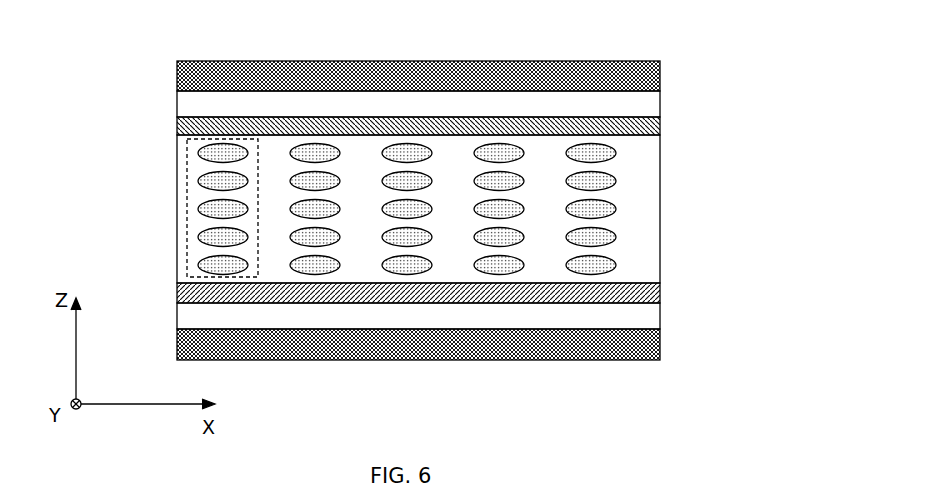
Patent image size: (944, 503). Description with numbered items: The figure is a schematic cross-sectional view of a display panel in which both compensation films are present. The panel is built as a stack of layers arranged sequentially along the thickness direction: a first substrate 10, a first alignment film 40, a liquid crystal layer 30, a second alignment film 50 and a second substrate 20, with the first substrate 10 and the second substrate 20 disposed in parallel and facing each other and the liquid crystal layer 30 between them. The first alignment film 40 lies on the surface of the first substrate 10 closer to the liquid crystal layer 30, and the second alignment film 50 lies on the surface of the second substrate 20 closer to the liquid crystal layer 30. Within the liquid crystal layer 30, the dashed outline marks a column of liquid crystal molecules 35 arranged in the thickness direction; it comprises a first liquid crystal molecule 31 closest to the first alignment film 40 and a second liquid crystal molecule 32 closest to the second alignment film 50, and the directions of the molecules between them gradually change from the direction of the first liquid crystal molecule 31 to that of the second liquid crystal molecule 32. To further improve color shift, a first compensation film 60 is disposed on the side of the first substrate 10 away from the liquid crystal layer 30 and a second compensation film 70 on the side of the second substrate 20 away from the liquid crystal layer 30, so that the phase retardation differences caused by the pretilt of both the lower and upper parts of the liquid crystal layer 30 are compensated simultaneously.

The second compensation film 70 is at (618, 75).
The second substrate 20 is at (650, 103).
The second alignment film 50 is at (650, 126).
The liquid crystal layer 30 is at (677, 135).
The second liquid crystal molecule 32 is at (238, 155).
The first liquid crystal molecule 31 is at (238, 263).
The column of liquid crystal molecules 35 is at (187, 168).
The first alignment film 40 is at (648, 293).
The first substrate 10 is at (648, 313).
The first compensation film 60 is at (595, 350).